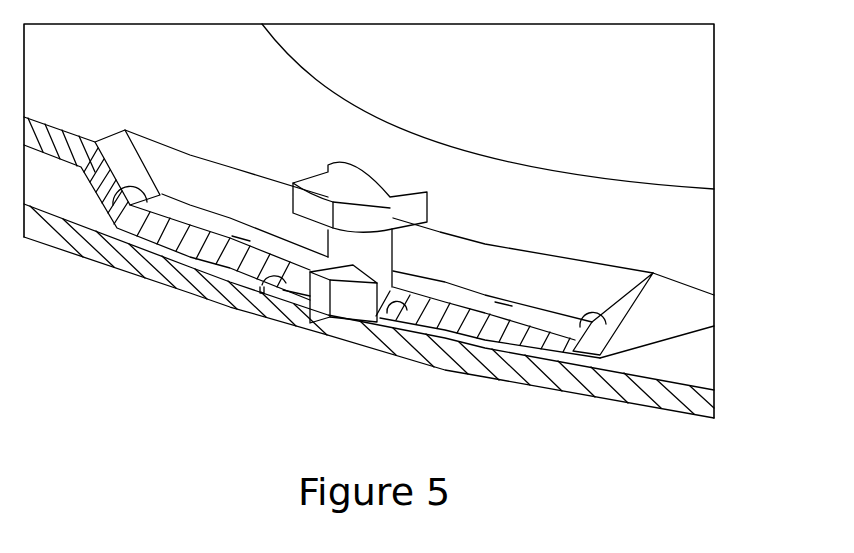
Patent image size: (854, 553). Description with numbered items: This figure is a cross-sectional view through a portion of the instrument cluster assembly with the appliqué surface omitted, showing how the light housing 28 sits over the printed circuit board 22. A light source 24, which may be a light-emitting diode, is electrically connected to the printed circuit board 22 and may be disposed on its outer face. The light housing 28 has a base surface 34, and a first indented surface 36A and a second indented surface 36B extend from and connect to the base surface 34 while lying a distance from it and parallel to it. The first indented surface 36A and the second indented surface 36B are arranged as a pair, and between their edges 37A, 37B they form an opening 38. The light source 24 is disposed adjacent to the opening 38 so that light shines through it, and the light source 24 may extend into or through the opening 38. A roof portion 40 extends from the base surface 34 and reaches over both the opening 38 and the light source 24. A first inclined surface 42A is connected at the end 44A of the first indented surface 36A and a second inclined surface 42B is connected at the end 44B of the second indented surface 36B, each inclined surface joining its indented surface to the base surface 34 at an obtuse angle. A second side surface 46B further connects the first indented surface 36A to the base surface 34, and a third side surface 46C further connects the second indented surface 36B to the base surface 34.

The printed circuit board 22 is at (438, 360).
The light source 24 is at (348, 303).
The light housing 28 is at (718, 214).
The base surface 34 is at (692, 255).
The first indented surface 36A is at (238, 233).
The second indented surface 36B is at (502, 303).
The edge of first indented surface 37A is at (307, 310).
The edge of second indented surface 37B is at (367, 348).
The opening 38 is at (262, 288).
The roof portion 40 is at (362, 188).
The first inclined surface 42A is at (112, 143).
The second inclined surface 42B is at (622, 290).
The end of first indented surface 44A is at (112, 204).
The end of second indented surface 44B is at (592, 320).
The second side surface 46B is at (178, 162).
The third side surface 46C is at (458, 246).